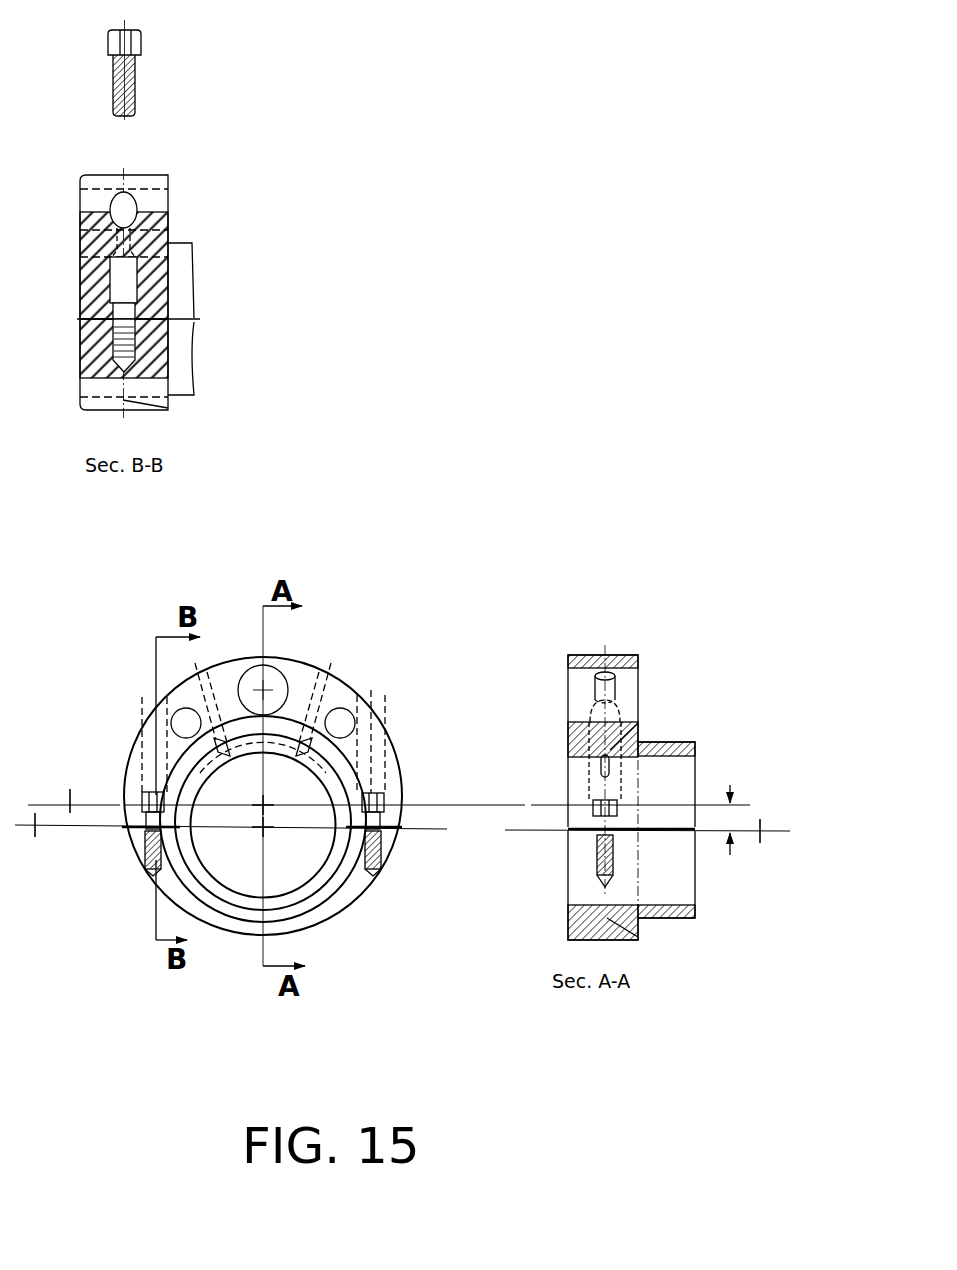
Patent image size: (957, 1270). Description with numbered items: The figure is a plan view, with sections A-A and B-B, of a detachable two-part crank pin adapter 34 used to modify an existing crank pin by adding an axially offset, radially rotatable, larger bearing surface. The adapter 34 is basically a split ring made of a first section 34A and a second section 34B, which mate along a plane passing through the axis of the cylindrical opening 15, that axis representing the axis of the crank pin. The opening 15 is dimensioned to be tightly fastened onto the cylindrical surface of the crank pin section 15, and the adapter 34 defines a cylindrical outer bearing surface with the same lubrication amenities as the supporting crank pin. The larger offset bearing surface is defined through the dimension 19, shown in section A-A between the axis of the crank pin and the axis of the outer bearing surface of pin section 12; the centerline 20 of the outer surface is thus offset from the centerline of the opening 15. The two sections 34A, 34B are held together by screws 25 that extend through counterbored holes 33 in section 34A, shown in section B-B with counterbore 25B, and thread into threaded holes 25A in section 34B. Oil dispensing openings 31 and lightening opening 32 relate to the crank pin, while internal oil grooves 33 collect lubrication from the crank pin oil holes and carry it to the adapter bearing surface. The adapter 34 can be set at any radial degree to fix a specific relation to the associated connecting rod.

The crank pin section 12 is at (757, 858).
The cylindrical opening 15 is at (387, 963).
The dimension 19 is at (735, 777).
The centerline of clamp 20 is at (389, 791).
The screw 25 is at (148, 47).
The threaded hole 25A is at (106, 345).
The counterbored hole 25B is at (106, 277).
The oil dispensing opening 31 is at (339, 672).
The lightening opening 32 is at (149, 732).
The counterbored hole / internal oil groove 33 is at (316, 762).
The adapter 34 is at (213, 948).
The first section 34A is at (170, 194).
The second section 34B is at (177, 396).